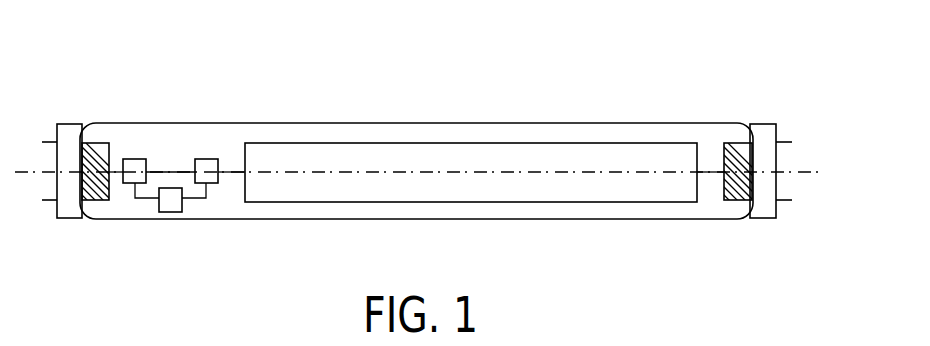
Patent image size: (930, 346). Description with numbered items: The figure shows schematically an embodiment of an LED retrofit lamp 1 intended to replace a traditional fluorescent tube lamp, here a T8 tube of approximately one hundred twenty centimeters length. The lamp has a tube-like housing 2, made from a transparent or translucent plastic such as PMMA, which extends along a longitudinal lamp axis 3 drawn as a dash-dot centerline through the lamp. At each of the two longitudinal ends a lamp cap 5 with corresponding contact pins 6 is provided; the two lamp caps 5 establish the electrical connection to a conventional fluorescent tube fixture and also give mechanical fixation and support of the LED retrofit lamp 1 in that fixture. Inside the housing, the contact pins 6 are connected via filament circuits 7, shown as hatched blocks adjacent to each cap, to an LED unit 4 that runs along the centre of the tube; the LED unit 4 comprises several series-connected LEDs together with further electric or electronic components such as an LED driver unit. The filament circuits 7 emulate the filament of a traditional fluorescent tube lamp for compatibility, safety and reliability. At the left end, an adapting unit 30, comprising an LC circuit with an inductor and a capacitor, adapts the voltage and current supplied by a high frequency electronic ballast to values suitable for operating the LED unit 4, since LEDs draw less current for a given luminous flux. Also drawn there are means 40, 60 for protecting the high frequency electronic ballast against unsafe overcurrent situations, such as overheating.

The LED retrofit lamp 1 is at (633, 93).
The tube-like housing 2 is at (543, 210).
The longitudinal lamp axis 3 is at (802, 177).
The LED unit 4 is at (470, 142).
The lamp cap 5 is at (71, 130).
The contact pins 6 is at (50, 140).
The filament circuits 7 is at (97, 202).
The adapting unit 30 is at (208, 157).
The means for protecting the high frequency electronic ballast 40 is at (170, 213).
The means for protecting the high frequency electronic ballast 60 is at (134, 157).